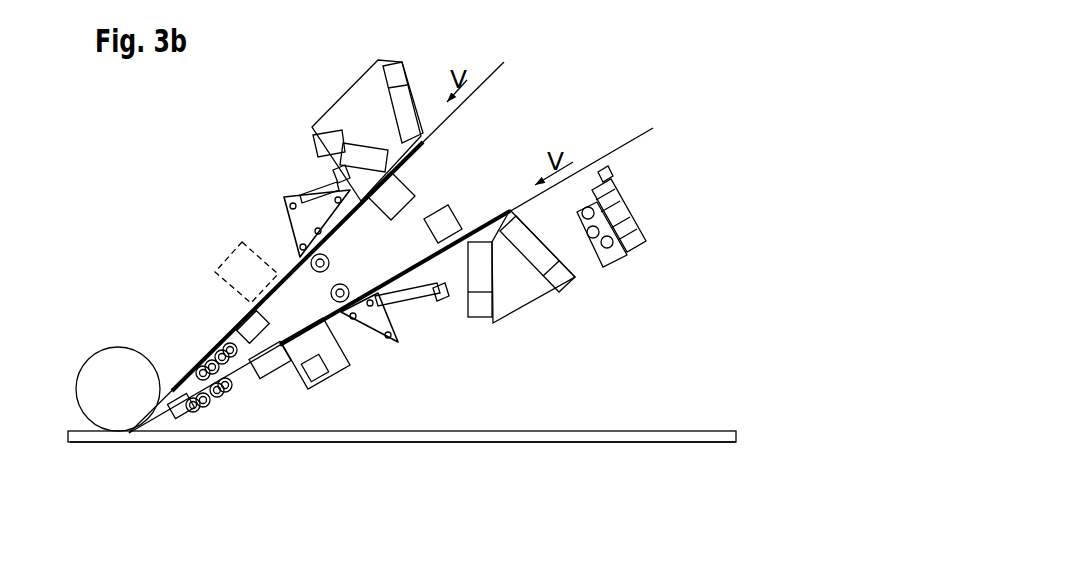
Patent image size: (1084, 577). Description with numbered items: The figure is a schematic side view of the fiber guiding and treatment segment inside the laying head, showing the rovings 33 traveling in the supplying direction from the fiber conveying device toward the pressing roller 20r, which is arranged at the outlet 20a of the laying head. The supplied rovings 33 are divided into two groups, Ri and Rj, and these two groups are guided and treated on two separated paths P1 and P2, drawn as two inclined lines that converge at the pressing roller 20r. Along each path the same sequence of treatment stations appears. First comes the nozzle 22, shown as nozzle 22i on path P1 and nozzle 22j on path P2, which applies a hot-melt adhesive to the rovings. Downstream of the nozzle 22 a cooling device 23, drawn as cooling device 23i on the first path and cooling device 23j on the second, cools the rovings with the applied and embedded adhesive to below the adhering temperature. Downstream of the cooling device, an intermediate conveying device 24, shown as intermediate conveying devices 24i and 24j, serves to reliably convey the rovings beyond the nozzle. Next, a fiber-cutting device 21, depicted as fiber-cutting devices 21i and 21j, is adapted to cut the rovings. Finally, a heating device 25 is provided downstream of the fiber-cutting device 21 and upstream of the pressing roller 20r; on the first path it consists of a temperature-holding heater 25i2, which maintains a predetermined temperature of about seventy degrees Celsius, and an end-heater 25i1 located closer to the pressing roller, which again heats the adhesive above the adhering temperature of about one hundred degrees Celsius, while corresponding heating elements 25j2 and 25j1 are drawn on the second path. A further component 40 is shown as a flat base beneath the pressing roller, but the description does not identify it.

The outlet 20a is at (105, 448).
The pressing roller 20r is at (122, 412).
The fiber-cutting device 21 is at (214, 254).
The fiber-cutting device 21i is at (265, 290).
The transfer device of path Rj 21j is at (353, 418).
The nozzle 22 is at (493, 205).
The conveying unit of path Ri 22i is at (377, 135).
The conveying unit of path Rj 22j is at (533, 290).
The cooling device 23 is at (416, 203).
The cooling device 23i is at (402, 207).
The guide element of path Rj 23j is at (453, 234).
The intermediate conveying device 24 is at (331, 258).
The intermediate conveying device 24i is at (282, 222).
The pressure roller mechanism of path Rj 24j is at (380, 345).
The heating device 25 is at (222, 323).
The end-heater 25i1 is at (194, 364).
The temperature holding heater 25i2 is at (236, 325).
The guide rollers of path Rj 25j1 is at (207, 411).
The guide block of path Rj 25j2 is at (273, 379).
The rovings 33 is at (494, 73).
The base plate 40 is at (614, 431).
The path P1 is at (428, 93).
The path P2 is at (640, 157).